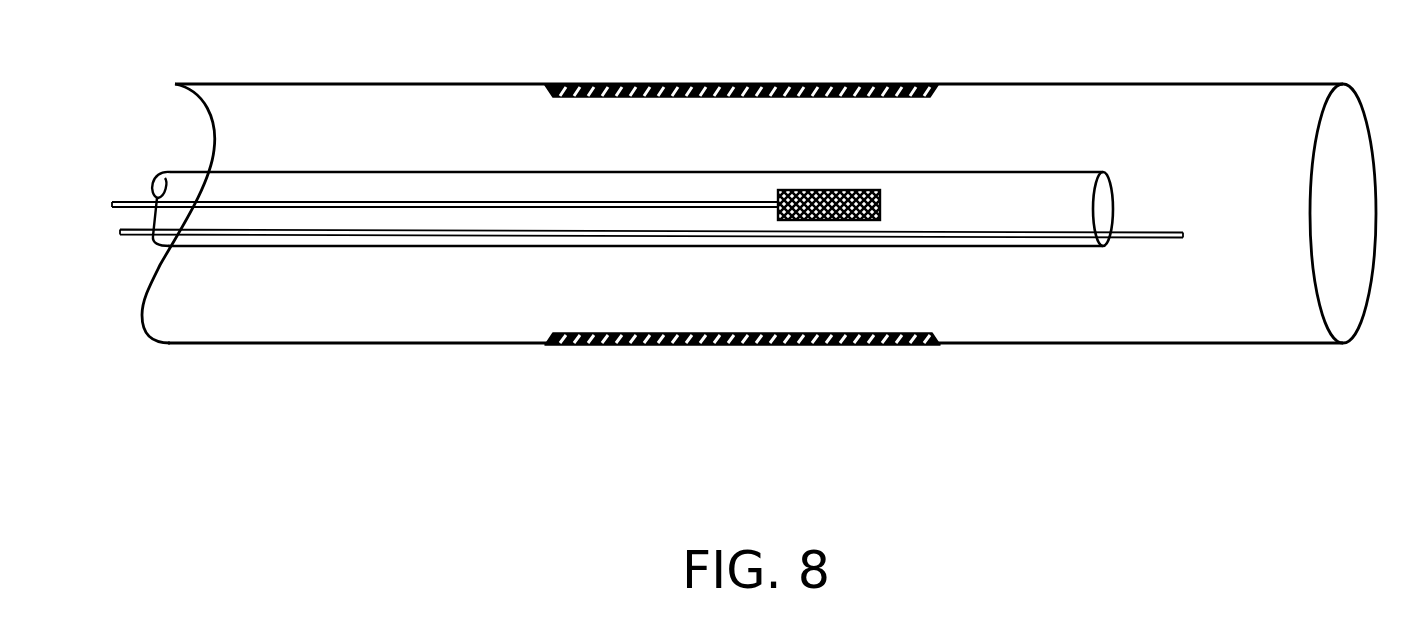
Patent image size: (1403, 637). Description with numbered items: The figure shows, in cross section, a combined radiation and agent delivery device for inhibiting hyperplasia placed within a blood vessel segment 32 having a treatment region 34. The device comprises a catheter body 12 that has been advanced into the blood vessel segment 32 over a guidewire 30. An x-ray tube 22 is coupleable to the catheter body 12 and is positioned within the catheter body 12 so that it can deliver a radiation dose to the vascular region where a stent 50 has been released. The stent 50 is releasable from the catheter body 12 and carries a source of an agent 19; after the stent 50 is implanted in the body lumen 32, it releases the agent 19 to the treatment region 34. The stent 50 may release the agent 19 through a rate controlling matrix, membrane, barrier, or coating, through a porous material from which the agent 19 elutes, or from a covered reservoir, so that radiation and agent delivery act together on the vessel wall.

The catheter body 12 is at (418, 172).
The agent 19 is at (563, 85).
The x-ray tube 22 is at (795, 190).
The guidewire 30 is at (1125, 238).
The blood vessel segment 32 is at (1094, 94).
The treatment region 34 is at (941, 352).
The stent 50 is at (782, 53).